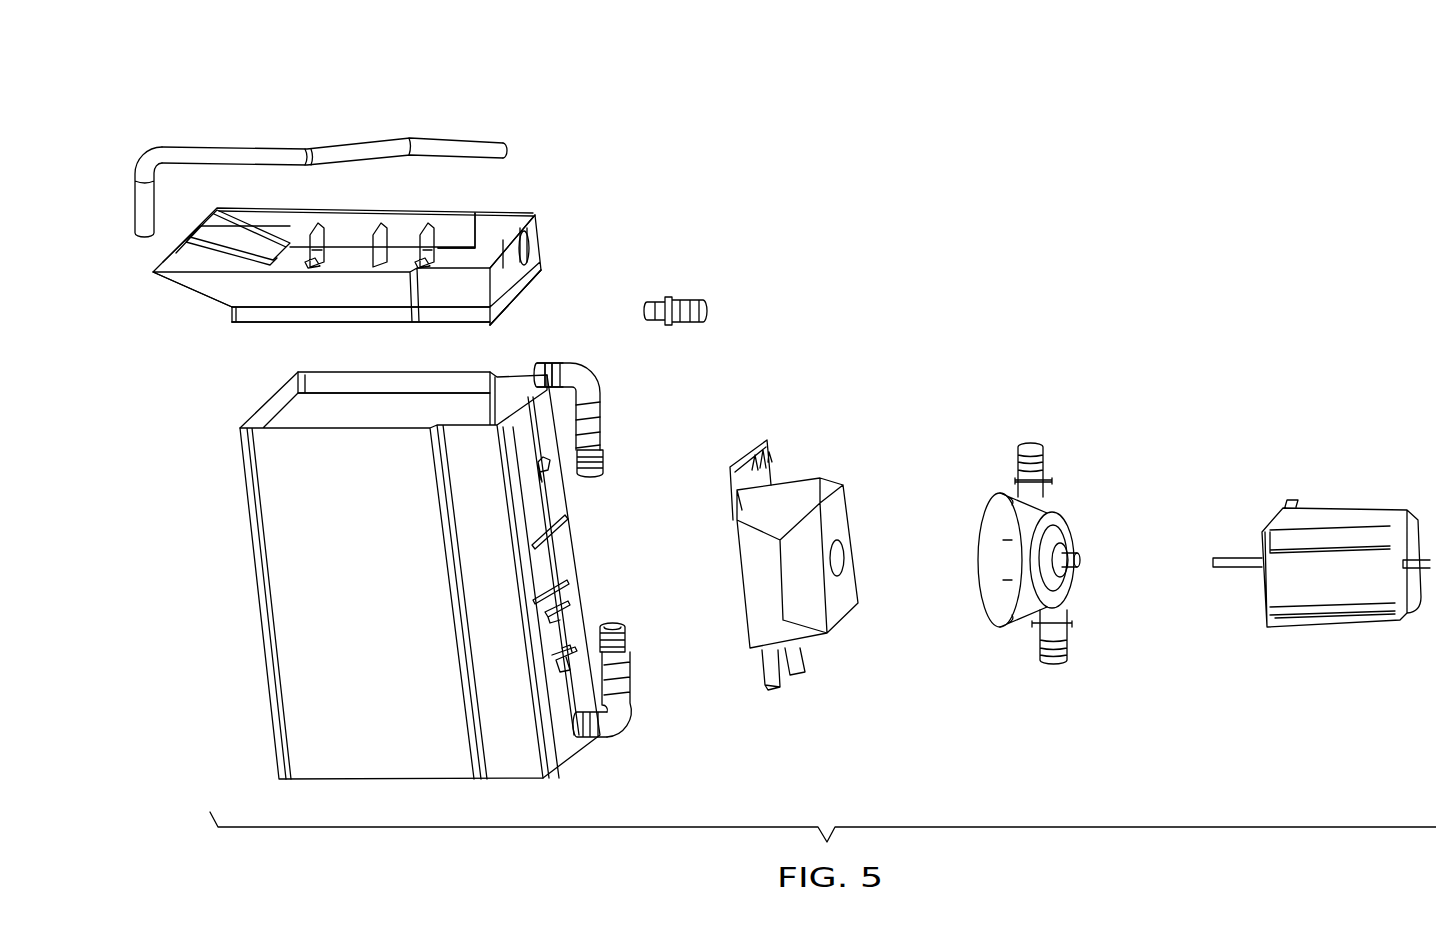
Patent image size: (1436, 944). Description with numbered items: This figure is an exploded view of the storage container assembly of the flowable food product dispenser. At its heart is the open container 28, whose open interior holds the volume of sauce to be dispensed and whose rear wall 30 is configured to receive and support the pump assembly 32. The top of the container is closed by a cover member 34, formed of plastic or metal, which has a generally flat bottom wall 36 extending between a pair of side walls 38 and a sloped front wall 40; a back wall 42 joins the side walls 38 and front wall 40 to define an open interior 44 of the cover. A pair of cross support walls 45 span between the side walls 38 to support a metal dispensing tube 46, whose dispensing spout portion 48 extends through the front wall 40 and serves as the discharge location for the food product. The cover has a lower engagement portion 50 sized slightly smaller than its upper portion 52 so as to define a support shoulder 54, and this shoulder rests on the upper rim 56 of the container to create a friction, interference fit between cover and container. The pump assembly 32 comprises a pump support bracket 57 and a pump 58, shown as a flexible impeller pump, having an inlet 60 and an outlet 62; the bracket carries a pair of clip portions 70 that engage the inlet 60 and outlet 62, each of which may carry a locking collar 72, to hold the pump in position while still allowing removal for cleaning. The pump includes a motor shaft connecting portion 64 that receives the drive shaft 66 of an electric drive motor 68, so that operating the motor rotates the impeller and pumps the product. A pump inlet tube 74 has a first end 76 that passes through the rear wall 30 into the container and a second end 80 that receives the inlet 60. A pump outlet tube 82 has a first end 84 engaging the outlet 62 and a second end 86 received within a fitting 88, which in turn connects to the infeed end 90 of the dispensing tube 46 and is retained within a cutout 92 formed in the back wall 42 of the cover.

The open container 28 is at (431, 558).
The rear wall 30 is at (580, 573).
The pump assembly 32 is at (843, 531).
The cover member 34 is at (347, 268).
The bottom wall 36 is at (397, 253).
The side walls 38 is at (390, 223).
The sloped front wall 40 is at (177, 258).
The back wall 42 is at (532, 243).
The open interior 44 is at (458, 215).
The cross support walls 45 is at (312, 247).
The dispensing tube 46 is at (337, 173).
The dispensing spout portion 48 is at (152, 215).
The lower engagement portion 50 is at (500, 308).
The upper portion 52 is at (195, 288).
The support shoulder 54 is at (302, 308).
The upper rim 56 is at (332, 430).
The pump support bracket 57 is at (840, 623).
The pump 58 is at (1068, 569).
The inlet 60 is at (1060, 660).
The outlet 62 is at (1022, 460).
The motor shaft connecting portion 64 is at (1080, 562).
The drive shaft 66 is at (1242, 570).
The electric drive motor 68 is at (1318, 546).
The clip portions 70 is at (802, 557).
The locking collar 72 is at (1050, 480).
The pump inlet tube 74 is at (627, 684).
The first end 76 is at (587, 737).
The second end 80 is at (610, 625).
The pump outlet tube 82 is at (591, 405).
The first end 84 is at (603, 460).
The second end 86 is at (557, 363).
The fitting 88 is at (683, 298).
The infeed end 90 is at (493, 140).
The cutout 92 is at (532, 233).